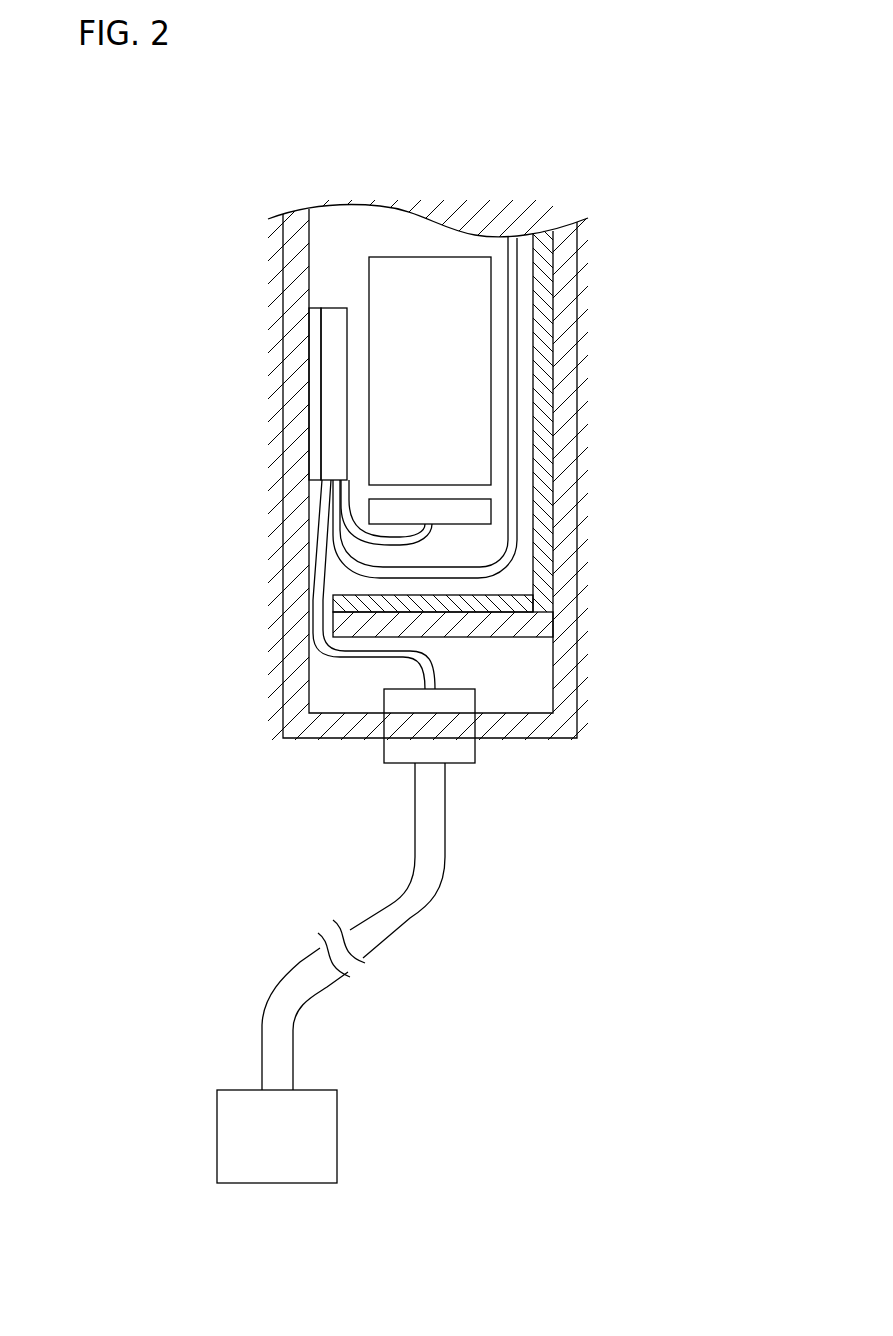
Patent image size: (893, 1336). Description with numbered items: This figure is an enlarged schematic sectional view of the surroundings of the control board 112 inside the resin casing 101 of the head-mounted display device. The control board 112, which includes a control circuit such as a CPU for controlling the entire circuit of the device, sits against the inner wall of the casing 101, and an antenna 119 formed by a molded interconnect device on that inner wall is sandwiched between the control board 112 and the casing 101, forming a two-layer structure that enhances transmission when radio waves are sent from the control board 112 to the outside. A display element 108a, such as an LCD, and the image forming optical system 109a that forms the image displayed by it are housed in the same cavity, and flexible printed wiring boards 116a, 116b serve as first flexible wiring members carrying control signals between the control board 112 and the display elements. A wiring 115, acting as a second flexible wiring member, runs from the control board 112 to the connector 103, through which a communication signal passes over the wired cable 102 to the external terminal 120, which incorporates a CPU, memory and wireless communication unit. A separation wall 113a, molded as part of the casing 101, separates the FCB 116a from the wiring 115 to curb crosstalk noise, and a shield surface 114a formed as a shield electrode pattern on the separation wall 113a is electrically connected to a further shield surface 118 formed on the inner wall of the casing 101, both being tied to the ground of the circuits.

The casing 101 is at (577, 428).
The wired cable 102 is at (417, 918).
The connector 103 is at (457, 763).
The display element 108a is at (492, 505).
The image forming optical system 109a is at (462, 257).
The control board 112 is at (340, 307).
The separation wall 113a is at (502, 637).
The shield surface 114a is at (500, 593).
The wiring 115 is at (335, 659).
The flexible printed wiring board 116a is at (418, 543).
The flexible printed wiring board 116b is at (520, 390).
The shield surface 118 is at (543, 247).
The antenna 119 is at (320, 307).
The external terminal 120 is at (337, 1130).